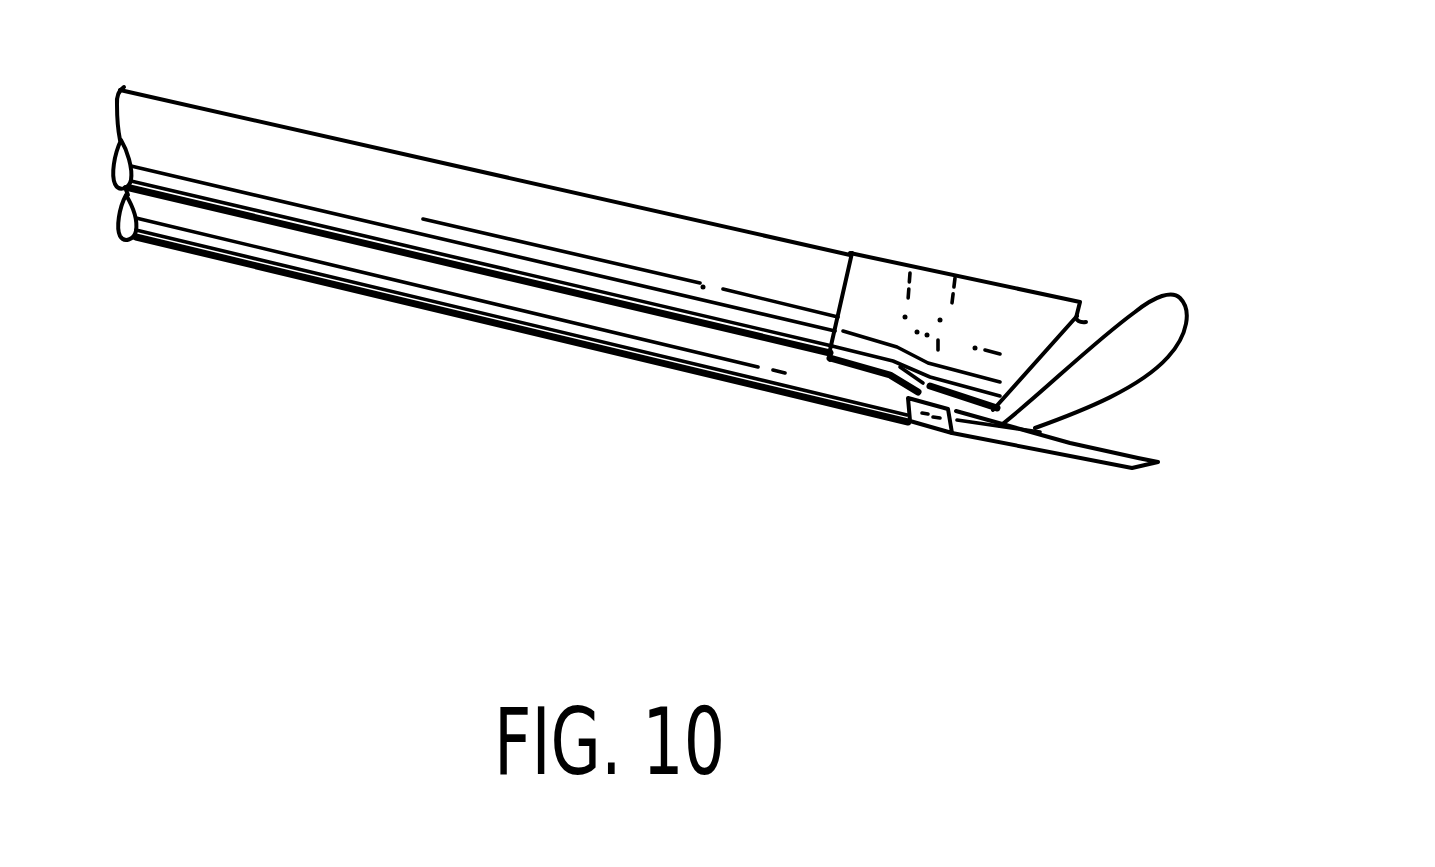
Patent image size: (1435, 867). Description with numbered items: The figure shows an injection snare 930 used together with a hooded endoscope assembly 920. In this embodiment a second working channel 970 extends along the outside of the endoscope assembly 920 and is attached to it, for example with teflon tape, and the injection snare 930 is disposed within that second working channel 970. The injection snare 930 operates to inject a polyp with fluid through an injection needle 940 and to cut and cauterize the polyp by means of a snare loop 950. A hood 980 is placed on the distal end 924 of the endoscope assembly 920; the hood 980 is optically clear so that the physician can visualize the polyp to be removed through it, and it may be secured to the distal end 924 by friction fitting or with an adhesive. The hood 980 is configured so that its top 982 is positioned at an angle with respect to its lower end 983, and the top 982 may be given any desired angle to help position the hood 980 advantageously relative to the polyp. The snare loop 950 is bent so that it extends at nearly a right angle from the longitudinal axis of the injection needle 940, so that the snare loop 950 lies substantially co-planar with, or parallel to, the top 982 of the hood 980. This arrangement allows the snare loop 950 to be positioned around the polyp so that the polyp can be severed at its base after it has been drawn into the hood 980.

The endoscope assembly 920 is at (571, 192).
The distal end 924 is at (833, 255).
The injection snare 930 is at (1176, 400).
The injection needle 940 is at (1045, 450).
The snare loop 950 is at (1188, 336).
The second working channel 970 is at (530, 333).
The hood 980 is at (967, 270).
The top of the hood 982 is at (1086, 322).
The lower end of the hood 983 is at (910, 418).